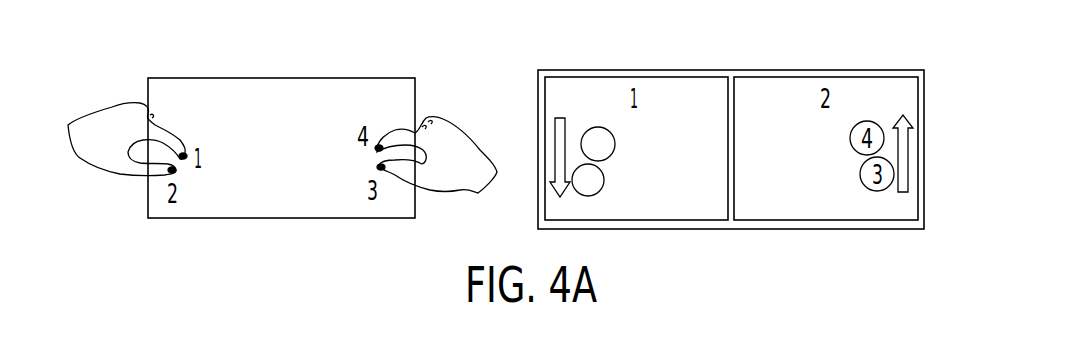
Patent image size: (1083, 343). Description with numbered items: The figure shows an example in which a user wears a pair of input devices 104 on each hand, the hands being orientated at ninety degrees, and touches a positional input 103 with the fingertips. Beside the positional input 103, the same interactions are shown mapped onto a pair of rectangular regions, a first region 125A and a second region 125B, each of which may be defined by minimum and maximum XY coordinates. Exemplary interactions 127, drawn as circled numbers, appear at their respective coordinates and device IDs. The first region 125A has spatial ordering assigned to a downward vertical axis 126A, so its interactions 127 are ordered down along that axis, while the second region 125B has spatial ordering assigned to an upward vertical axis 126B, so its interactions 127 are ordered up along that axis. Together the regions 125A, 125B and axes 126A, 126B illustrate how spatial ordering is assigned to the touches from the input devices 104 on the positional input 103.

The positional input 103 is at (387, 78).
The input devices 104 is at (186, 152).
The first region 125A is at (690, 90).
The second region 125B is at (790, 90).
The downward vertical axis 126A is at (560, 123).
The upward vertical axis 126B is at (902, 163).
The interactions 127 is at (617, 143).